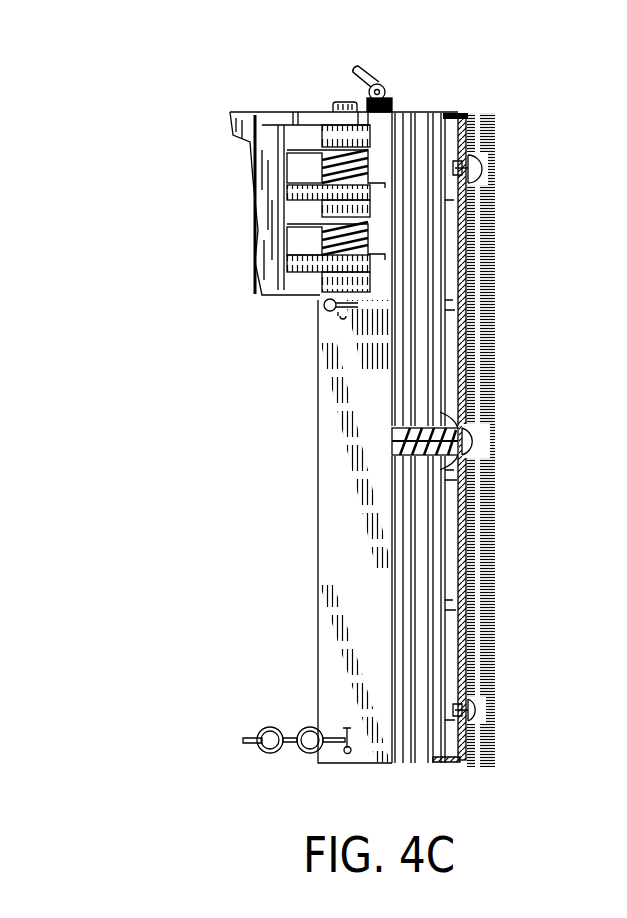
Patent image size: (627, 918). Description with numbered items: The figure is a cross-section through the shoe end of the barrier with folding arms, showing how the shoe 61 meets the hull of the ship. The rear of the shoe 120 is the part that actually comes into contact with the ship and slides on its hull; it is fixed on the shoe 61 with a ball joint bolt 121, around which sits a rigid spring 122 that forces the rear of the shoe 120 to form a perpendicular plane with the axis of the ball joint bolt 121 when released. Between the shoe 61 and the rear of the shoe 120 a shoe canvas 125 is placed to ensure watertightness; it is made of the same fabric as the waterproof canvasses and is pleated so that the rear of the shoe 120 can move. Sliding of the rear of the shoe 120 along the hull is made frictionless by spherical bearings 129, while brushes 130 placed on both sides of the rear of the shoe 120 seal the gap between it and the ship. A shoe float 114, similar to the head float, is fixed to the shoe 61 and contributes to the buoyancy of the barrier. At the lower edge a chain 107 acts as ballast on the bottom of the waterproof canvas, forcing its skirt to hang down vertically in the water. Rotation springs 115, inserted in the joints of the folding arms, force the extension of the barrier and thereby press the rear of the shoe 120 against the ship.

The rotation springs 115 is at (298, 123).
The shoe 61 is at (383, 130).
The rear of the shoe 120 is at (458, 115).
The spherical bearings 129 is at (483, 160).
The brushes 130 is at (487, 268).
The rigid spring 122 is at (452, 420).
The ball joint bolt 121 is at (470, 478).
The shoe float 114 is at (332, 512).
The chain 107 is at (263, 727).
The shoe canvas 125 is at (423, 762).